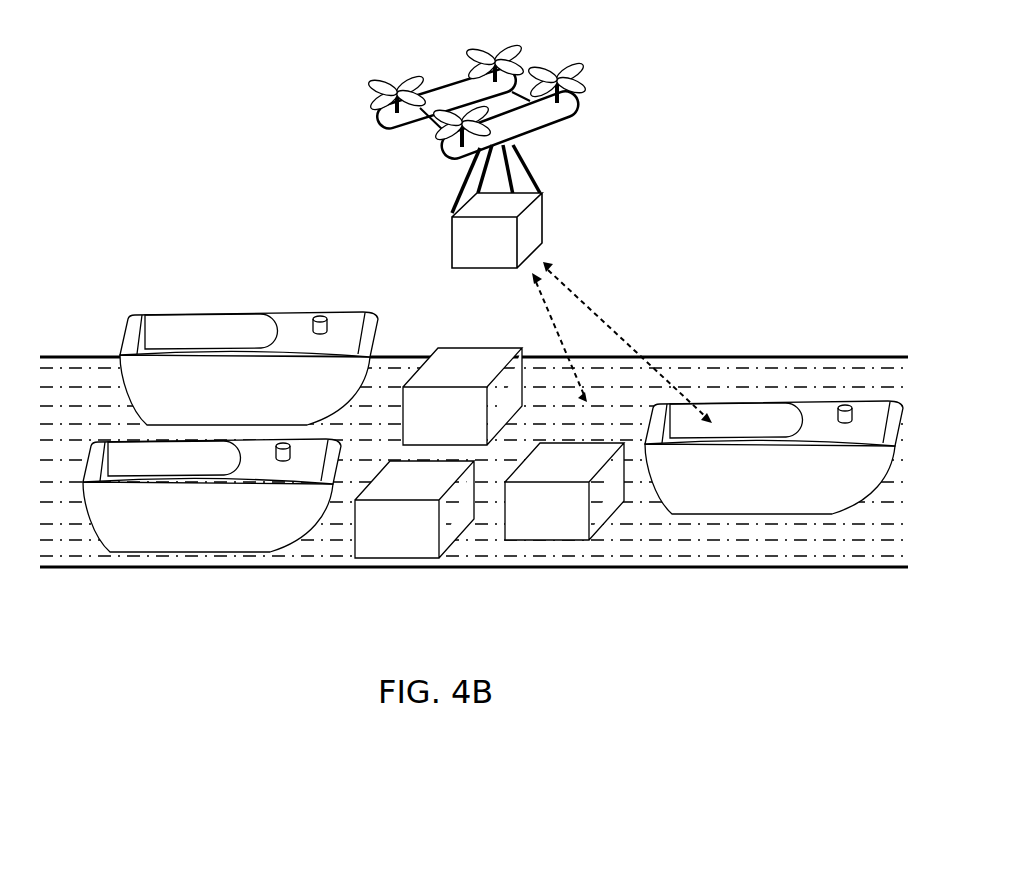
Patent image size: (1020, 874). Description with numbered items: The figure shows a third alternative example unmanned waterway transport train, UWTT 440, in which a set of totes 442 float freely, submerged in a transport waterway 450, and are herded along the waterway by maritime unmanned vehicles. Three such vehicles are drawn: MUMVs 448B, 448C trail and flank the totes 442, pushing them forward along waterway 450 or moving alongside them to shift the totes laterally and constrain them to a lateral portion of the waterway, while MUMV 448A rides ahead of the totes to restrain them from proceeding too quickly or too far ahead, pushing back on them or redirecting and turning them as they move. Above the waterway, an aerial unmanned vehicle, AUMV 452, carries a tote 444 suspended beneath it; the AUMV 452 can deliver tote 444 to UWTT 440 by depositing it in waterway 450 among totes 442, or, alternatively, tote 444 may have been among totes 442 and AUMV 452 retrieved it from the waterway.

The UWTT 440 is at (822, 338).
The totes 442 is at (489, 453).
The tote 444 is at (527, 232).
The MUMV 448A is at (774, 457).
The MUMV 448B is at (249, 368).
The MUMV 448C is at (212, 495).
The transport waterway 450 is at (573, 578).
The AUMV 452 is at (455, 80).